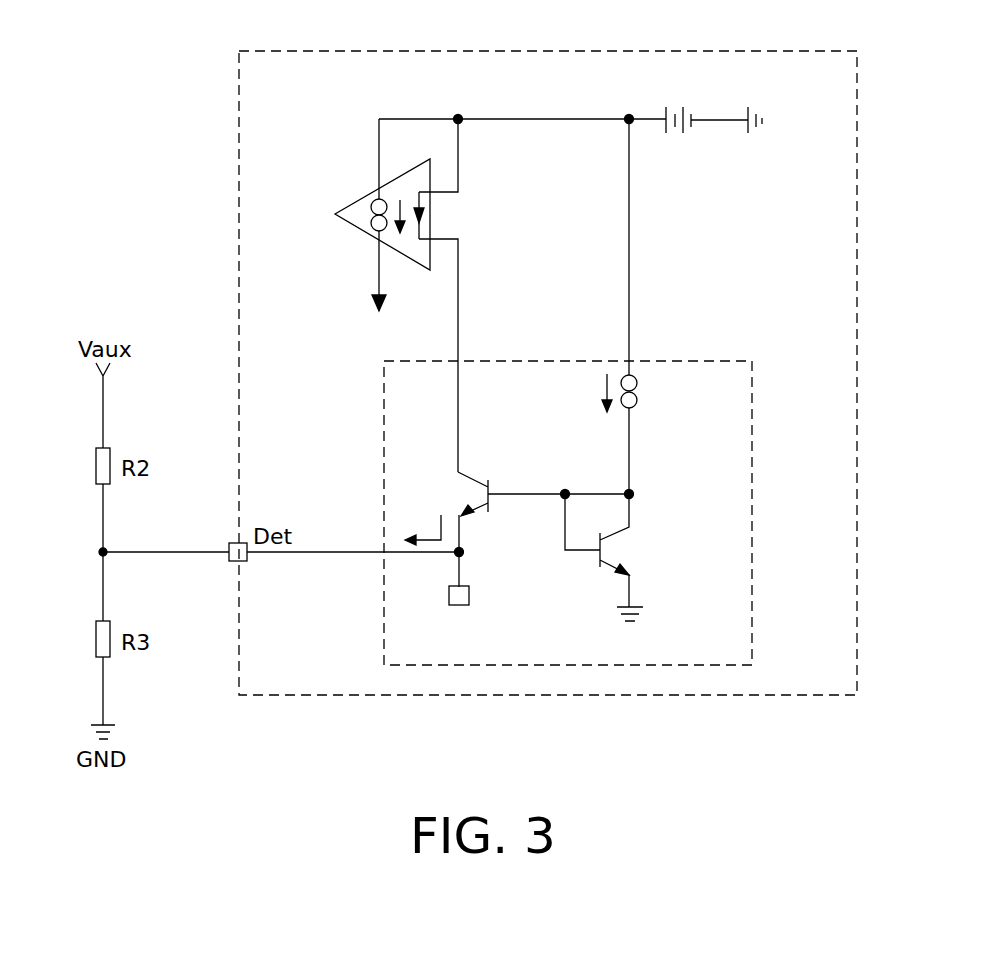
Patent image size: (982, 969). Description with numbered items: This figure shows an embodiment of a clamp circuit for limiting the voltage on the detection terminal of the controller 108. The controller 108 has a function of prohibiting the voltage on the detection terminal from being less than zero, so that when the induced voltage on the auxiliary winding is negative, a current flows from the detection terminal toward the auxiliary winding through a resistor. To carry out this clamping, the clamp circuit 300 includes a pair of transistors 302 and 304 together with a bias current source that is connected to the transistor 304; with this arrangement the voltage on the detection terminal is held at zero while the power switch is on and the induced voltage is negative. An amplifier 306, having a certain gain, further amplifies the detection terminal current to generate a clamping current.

The controller 108 is at (857, 362).
The clamp circuit 300 is at (695, 360).
The transistor 302 is at (486, 456).
The transistor 304 is at (648, 556).
The amplifier 306 is at (358, 230).